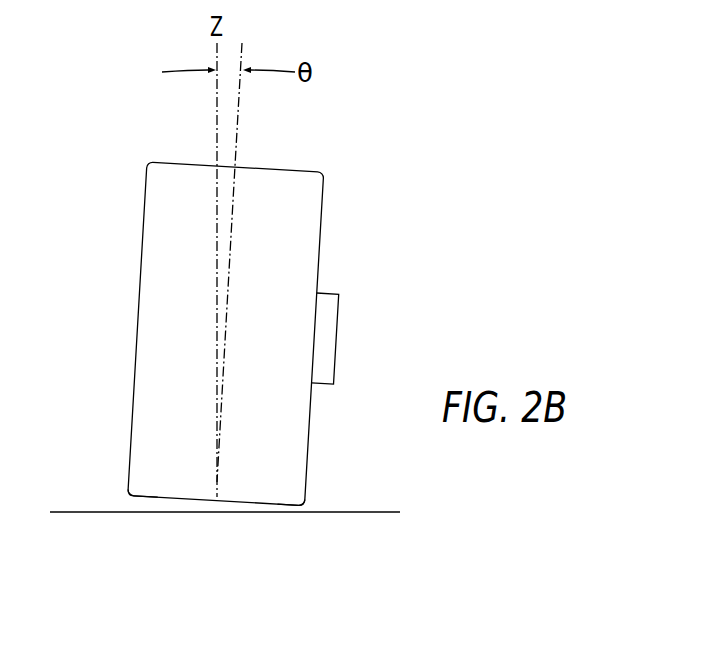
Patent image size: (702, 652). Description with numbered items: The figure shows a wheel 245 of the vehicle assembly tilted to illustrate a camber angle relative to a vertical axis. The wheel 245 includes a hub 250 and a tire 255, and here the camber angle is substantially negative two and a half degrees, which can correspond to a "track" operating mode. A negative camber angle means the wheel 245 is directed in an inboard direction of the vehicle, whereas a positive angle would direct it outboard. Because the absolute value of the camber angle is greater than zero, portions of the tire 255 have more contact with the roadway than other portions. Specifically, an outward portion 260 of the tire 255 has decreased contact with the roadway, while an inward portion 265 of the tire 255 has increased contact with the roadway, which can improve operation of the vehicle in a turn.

The wheel 245 is at (139, 106).
The hub 250 is at (332, 292).
The tire 255 is at (287, 168).
The outward portion 260 is at (153, 500).
The inward portion 265 is at (257, 505).